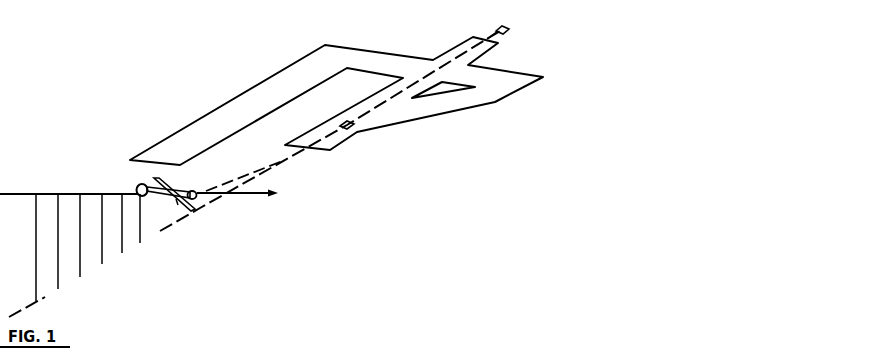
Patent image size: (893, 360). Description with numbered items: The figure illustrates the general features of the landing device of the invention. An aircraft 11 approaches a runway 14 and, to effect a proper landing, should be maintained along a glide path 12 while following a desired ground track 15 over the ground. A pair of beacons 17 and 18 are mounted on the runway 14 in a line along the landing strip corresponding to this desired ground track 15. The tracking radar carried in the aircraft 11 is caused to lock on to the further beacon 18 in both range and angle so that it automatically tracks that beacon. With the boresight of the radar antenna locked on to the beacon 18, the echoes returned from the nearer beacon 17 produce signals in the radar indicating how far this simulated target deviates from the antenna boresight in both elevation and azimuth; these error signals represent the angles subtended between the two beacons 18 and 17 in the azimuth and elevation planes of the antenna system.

The aircraft 11 is at (187, 211).
The glide path 12 is at (118, 189).
The runway 14 is at (297, 136).
The ground track 15 is at (163, 228).
The beacon 17 is at (348, 129).
The beacon 18 is at (510, 30).